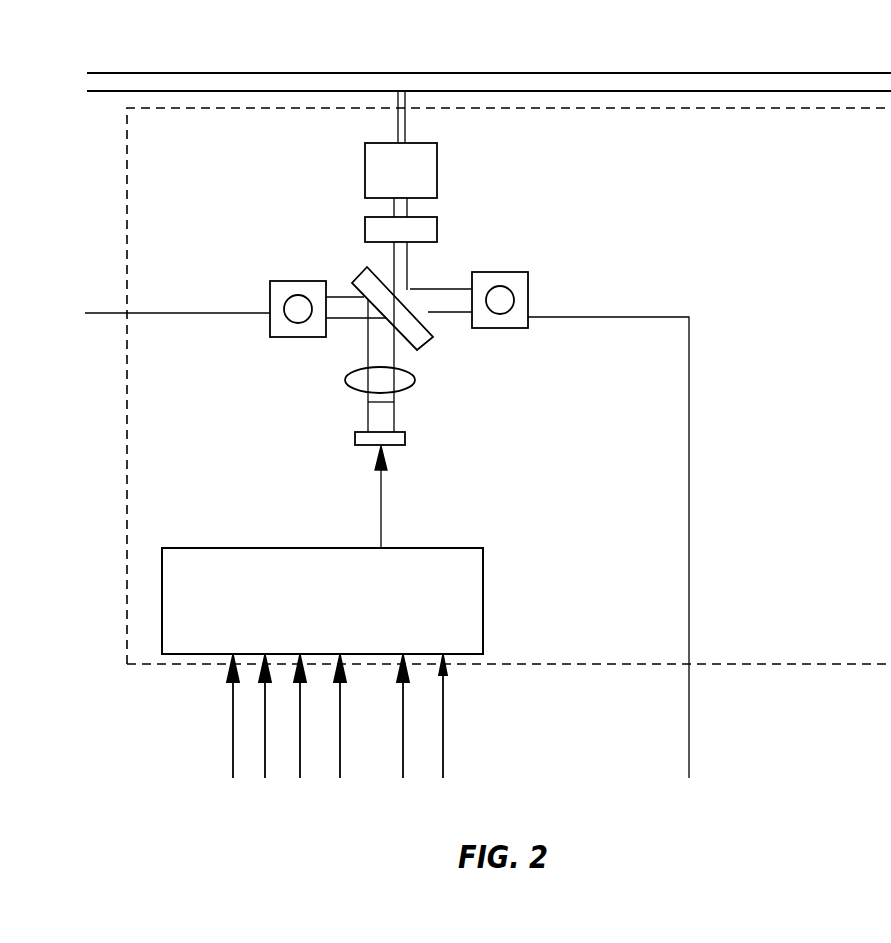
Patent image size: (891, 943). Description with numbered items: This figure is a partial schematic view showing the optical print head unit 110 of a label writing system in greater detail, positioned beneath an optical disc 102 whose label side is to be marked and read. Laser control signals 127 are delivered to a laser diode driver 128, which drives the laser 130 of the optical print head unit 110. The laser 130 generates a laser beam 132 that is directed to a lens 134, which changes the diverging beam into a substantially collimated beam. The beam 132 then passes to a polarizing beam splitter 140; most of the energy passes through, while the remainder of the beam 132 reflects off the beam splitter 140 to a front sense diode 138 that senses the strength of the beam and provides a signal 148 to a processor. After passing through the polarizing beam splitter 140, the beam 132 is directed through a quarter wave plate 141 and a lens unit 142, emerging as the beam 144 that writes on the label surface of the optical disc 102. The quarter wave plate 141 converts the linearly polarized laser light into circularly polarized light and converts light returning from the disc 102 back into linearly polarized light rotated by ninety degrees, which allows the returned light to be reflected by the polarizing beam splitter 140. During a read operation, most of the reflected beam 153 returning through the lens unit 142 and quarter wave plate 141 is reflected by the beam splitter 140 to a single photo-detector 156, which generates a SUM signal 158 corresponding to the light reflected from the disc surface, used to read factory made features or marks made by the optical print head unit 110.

The optical disc 102 is at (570, 73).
The optical print head unit 110 is at (213, 108).
The laser control signals 127 is at (455, 724).
The laser diode driver 128 is at (483, 617).
The laser 130 is at (405, 438).
The laser beam 132 is at (392, 410).
The lens 134 is at (415, 380).
The front sense diode 138 is at (270, 293).
The polarizing beam splitter 140 is at (428, 343).
The quarter wave plate 141 is at (365, 230).
The lens unit 142 is at (365, 180).
The focused laser beam 144 is at (406, 123).
The signal 148 is at (202, 316).
The reflected beam 153 is at (400, 293).
The photo-detector 156 is at (528, 284).
The SUM signal 158 is at (689, 462).